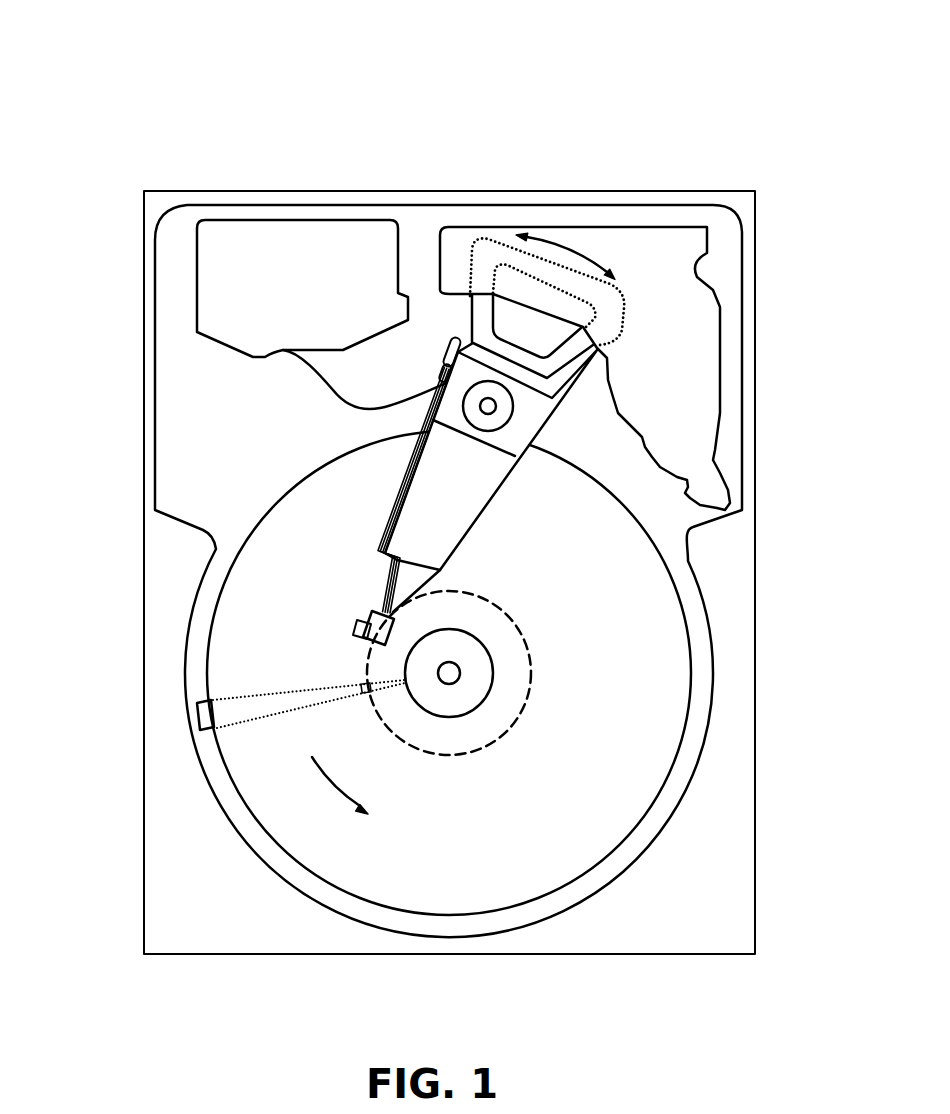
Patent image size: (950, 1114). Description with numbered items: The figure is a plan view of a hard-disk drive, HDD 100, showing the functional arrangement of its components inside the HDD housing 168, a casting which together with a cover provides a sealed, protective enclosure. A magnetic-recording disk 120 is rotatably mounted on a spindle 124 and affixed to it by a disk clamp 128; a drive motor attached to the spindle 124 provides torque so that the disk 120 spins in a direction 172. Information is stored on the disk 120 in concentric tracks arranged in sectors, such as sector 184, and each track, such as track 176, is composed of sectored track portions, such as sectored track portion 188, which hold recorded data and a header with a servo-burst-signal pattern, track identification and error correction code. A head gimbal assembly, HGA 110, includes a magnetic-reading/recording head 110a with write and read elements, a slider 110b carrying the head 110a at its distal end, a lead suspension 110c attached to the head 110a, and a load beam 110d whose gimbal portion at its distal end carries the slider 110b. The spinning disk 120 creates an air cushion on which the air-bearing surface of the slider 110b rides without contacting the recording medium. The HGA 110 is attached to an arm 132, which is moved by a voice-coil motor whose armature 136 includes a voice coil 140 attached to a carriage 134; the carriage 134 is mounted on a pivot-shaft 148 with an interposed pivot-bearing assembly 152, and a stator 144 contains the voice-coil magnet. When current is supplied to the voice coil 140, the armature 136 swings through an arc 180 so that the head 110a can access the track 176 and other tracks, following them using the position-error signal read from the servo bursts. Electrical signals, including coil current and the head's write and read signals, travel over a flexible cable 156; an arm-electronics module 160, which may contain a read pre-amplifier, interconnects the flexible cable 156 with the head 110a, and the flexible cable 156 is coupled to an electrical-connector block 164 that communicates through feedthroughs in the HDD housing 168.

The HDD 100 is at (78, 80).
The head gimbal assembly 110 is at (78, 485).
The magnetic-reading/recording head 110a is at (370, 616).
The slider 110b is at (386, 607).
The lead suspension 110c is at (388, 577).
The load beam 110d is at (384, 552).
The magnetic-recording disk 120 is at (622, 628).
The spindle 124 is at (455, 671).
The disk clamp 128 is at (476, 689).
The arm 132 is at (443, 517).
The carriage 134 is at (507, 437).
The armature 136 is at (472, 340).
The voice coil 140 is at (483, 302).
The stator 144 is at (688, 313).
The pivot-shaft 148 is at (498, 404).
The pivot-bearing assembly 152 is at (503, 418).
The flexible cable 156 is at (320, 382).
The arm-electronics module 160 is at (441, 374).
The electrical-connector block 164 is at (220, 287).
The HDD housing 168 is at (738, 204).
The direction 172 is at (347, 790).
The track 176 is at (523, 632).
The arc 180 is at (566, 240).
The sector 184 is at (196, 720).
The sectored track portion 188 is at (362, 690).